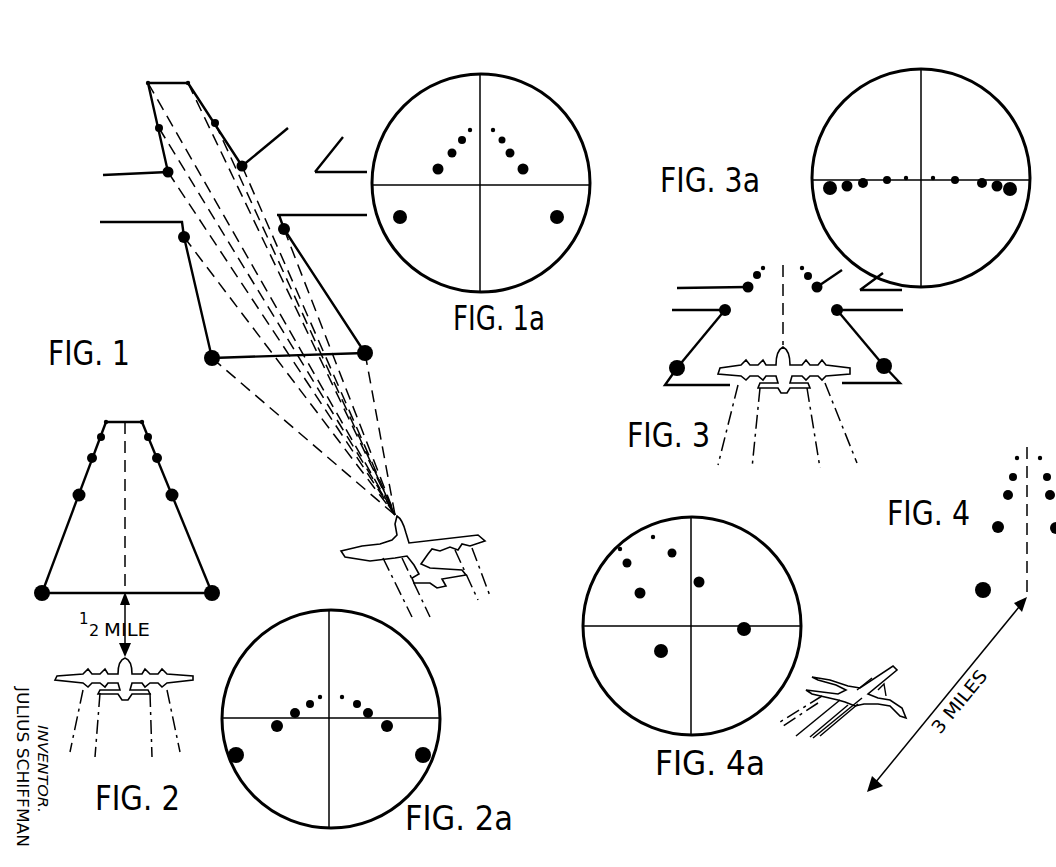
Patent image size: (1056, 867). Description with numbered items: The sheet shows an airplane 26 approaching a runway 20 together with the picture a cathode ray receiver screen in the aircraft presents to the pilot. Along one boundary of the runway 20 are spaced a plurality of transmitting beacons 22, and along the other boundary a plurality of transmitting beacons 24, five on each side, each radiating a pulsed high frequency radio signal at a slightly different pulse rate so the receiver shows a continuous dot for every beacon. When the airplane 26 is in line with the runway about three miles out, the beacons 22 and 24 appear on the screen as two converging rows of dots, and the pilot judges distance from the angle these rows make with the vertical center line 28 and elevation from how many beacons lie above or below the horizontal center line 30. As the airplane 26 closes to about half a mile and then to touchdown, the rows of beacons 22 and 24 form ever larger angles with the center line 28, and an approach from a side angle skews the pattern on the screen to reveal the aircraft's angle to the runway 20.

In FIG. 1, the runway 20 is at (254, 233).
In FIG. 1, the transmitting beacons 22 is at (148, 84).
In FIG. 1A, the transmitting beacons 22 is at (470, 130).
In FIG. 2, the transmitting beacons 22 is at (106, 422).
In FIG. 2A, the transmitting beacons 22 is at (320, 697).
In FIG. 3, the transmitting beacons 22 is at (763, 268).
In FIG. 3A, the transmitting beacons 22 is at (906, 178).
In FIG. 4, the transmitting beacons 22 is at (1017, 458).
In FIG. 4A, the transmitting beacons 22 is at (620, 549).
In FIG. 1, the transmitting beacons 24 is at (188, 84).
In FIG. 1A, the transmitting beacons 24 is at (493, 130).
In FIG. 2, the transmitting beacons 24 is at (142, 422).
In FIG. 2A, the transmitting beacons 24 is at (368, 713).
In FIG. 3, the transmitting beacons 24 is at (817, 287).
In FIG. 3A, the transmitting beacons 24 is at (1010, 189).
In FIG. 4, the transmitting beacons 24 is at (1040, 458).
In FIG. 4A, the transmitting beacons 24 is at (699, 582).
In FIG. 1, the airplane 26 is at (410, 533).
In FIG. 2, the airplane 26 is at (130, 670).
In FIG. 3, the airplane 26 is at (787, 360).
In FIG. 4, the airplane 26 is at (870, 676).
In FIG. 1A, the center line 28 is at (478, 243).
In FIG. 2A, the center line 28 is at (330, 817).
In FIG. 3A, the center line 28 is at (922, 241).
In FIG. 4A, the center line 28 is at (692, 721).
In FIG. 1A, the horizontal center line 30 is at (493, 186).